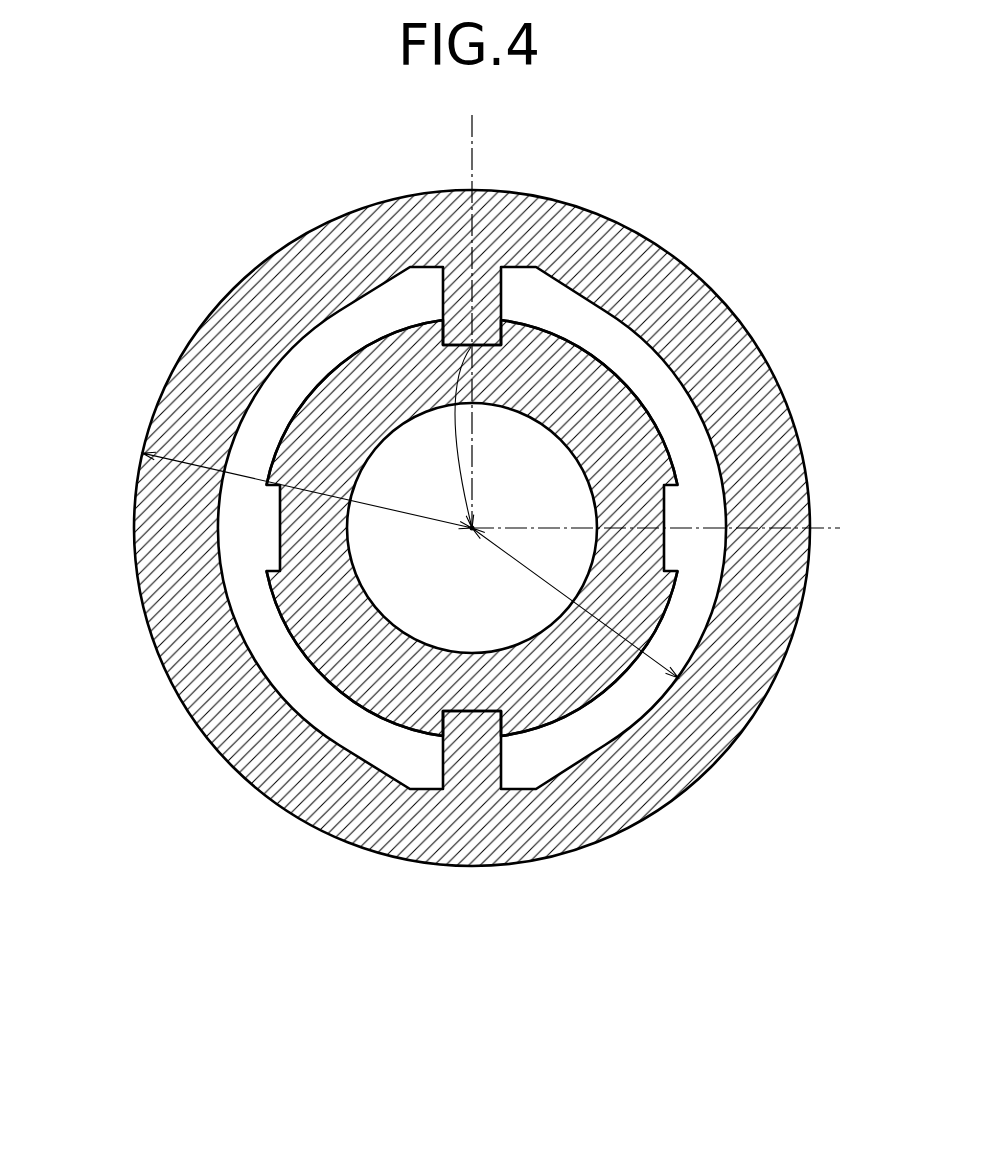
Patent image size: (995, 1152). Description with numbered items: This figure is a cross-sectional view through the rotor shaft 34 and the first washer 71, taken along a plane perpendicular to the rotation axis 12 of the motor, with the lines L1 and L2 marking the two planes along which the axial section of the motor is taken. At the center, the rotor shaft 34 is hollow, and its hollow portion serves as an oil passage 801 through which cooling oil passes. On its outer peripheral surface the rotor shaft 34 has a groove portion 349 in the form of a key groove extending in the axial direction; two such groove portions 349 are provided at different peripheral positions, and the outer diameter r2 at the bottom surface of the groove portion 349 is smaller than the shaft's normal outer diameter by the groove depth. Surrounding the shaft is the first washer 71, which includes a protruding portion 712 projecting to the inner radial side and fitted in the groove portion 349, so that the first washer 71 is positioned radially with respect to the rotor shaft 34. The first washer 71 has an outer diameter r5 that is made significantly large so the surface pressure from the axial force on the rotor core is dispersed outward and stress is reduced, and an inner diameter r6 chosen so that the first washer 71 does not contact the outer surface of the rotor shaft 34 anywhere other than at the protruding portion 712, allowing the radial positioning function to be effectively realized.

The first washer 71 is at (635, 790).
The protruding portion 712 is at (488, 307).
The rotation axis 12 is at (340, 687).
The rotor shaft 34 is at (317, 605).
The groove portion 349 is at (492, 345).
The oil passage 801 is at (548, 515).
The line L1 is at (488, 320).
The line L2 is at (675, 546).
The outer diameter in the groove portion r2 is at (450, 437).
The outer diameter of the first washer r5 is at (307, 486).
The inner diameter of the first washer r6 is at (575, 603).